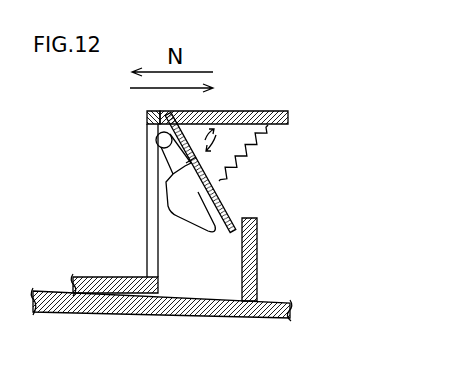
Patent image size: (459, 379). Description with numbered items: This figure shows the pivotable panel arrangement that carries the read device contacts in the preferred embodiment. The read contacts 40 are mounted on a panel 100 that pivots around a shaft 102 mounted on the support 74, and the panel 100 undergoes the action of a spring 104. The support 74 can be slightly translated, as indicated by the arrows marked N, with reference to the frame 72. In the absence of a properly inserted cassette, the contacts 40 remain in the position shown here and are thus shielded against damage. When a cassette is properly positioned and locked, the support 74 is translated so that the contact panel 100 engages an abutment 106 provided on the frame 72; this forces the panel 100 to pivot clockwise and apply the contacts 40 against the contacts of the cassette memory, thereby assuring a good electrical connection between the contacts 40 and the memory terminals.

The read contacts 40 is at (156, 182).
The frame 72 is at (79, 304).
The support 74 is at (148, 113).
The panel 100 is at (223, 198).
The shaft 102 is at (190, 109).
The spring 104 is at (243, 158).
The abutment 106 is at (252, 241).